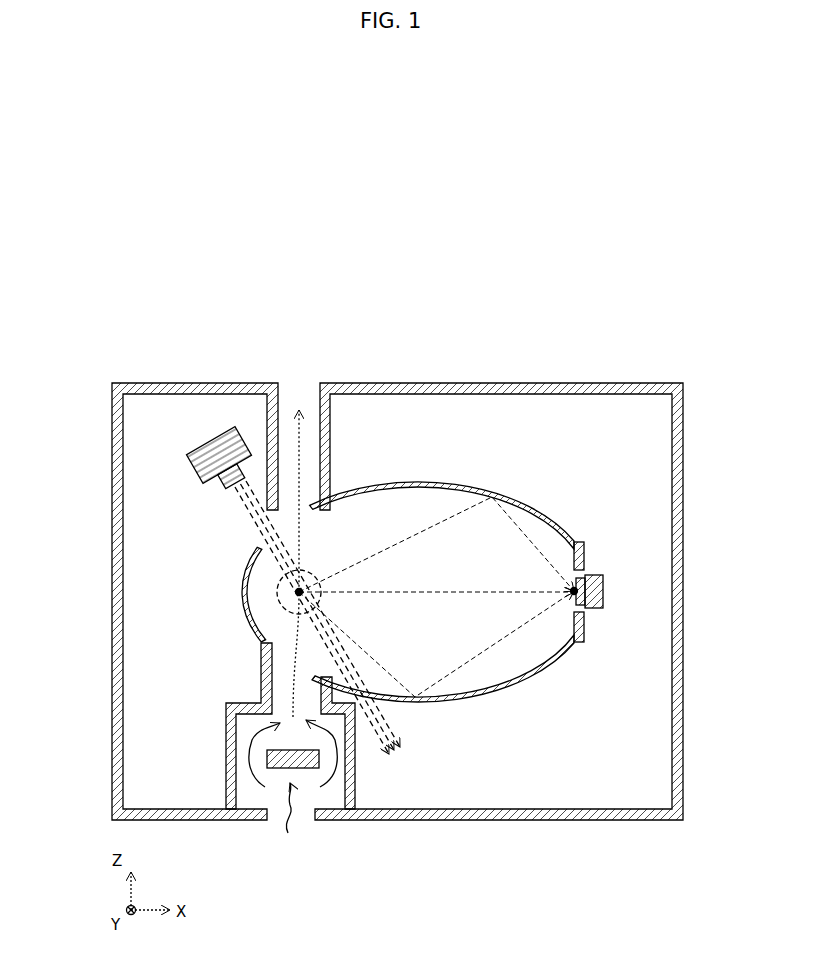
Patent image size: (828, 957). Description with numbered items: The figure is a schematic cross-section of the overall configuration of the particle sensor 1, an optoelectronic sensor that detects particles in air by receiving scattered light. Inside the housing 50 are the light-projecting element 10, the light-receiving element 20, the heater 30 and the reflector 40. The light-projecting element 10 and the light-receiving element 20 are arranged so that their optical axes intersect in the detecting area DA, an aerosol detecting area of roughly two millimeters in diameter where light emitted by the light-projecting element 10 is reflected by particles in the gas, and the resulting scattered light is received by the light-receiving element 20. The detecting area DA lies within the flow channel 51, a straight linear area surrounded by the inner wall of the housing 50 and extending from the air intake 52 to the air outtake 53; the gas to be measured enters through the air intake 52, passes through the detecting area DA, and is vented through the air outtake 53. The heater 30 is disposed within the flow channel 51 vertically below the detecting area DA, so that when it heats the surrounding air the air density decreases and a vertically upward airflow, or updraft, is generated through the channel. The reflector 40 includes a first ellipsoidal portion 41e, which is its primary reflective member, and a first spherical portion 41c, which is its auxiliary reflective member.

The particle sensor 1 is at (641, 350).
The light-projecting element 10 is at (214, 438).
The light-receiving element 20 is at (603, 590).
The heater 30 is at (307, 807).
The reflector 40 is at (413, 499).
The first spherical portion 41c is at (250, 548).
The first ellipsoidal portion 41e is at (438, 482).
The housing 50 is at (530, 383).
The flow channel 51 is at (265, 683).
The air intake 52 is at (278, 807).
The air outtake 53 is at (284, 395).
The detecting area DA is at (277, 597).